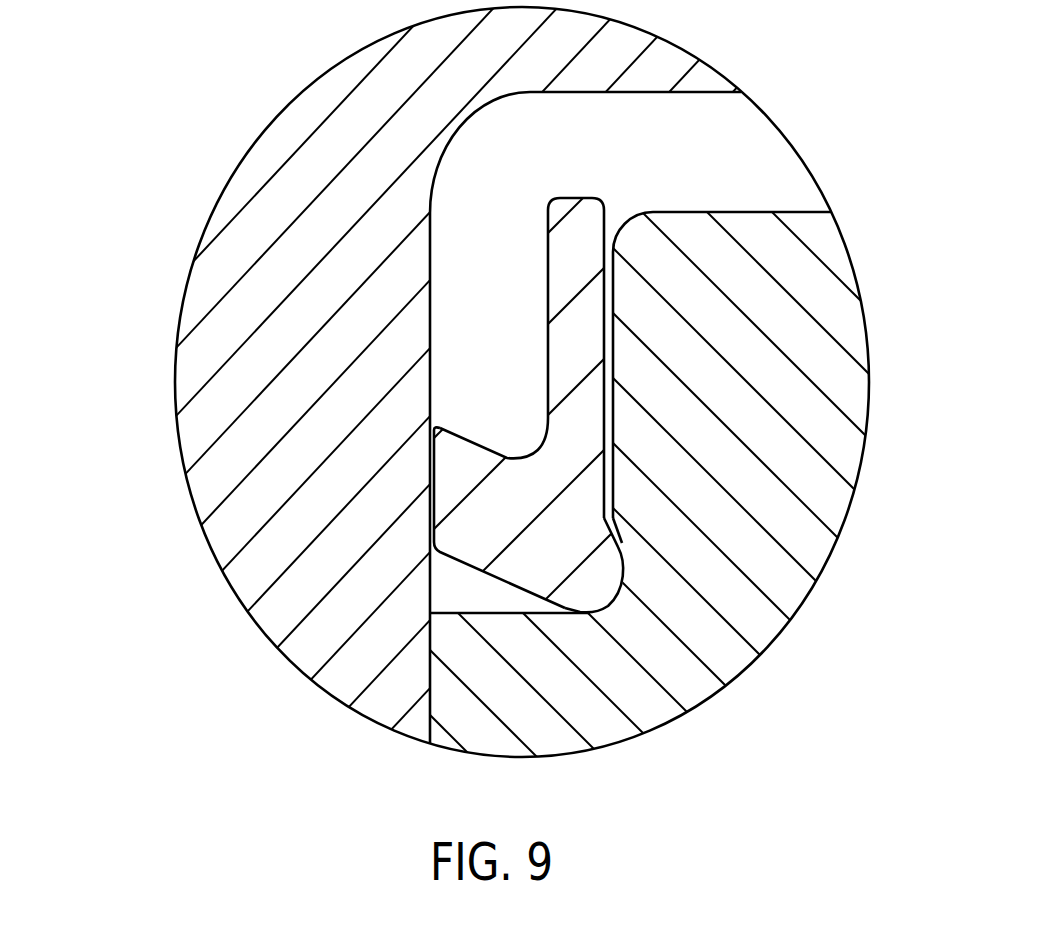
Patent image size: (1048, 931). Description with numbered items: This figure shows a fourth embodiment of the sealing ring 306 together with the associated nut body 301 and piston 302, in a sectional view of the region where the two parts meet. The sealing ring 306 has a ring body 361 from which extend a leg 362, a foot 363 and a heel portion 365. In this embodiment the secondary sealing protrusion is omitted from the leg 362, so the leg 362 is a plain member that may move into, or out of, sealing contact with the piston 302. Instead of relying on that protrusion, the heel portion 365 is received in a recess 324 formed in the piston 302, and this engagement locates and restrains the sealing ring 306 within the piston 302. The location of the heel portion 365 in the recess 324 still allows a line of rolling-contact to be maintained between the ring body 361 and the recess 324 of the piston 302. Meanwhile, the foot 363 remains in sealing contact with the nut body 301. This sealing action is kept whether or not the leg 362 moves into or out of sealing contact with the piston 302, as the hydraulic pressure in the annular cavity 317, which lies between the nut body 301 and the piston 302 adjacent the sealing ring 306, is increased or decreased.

The nut body 301 is at (280, 422).
The piston 302 is at (862, 248).
The annular cavity 317 is at (566, 149).
The sealing ring 306 is at (532, 409).
The ring body 361 is at (540, 290).
The leg 362 is at (580, 225).
The foot 363 is at (540, 532).
The recess 324 is at (622, 524).
The heel portion 365 is at (603, 578).